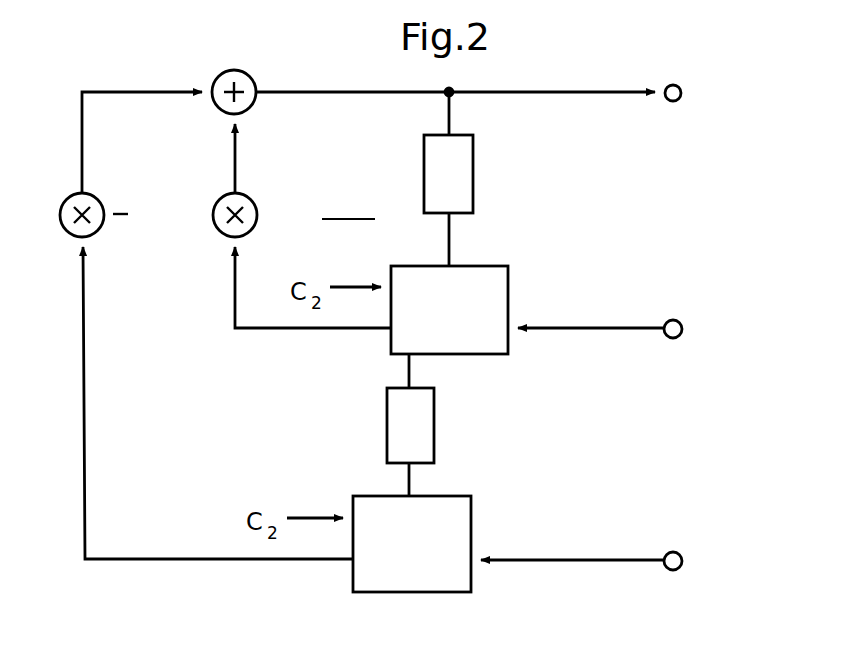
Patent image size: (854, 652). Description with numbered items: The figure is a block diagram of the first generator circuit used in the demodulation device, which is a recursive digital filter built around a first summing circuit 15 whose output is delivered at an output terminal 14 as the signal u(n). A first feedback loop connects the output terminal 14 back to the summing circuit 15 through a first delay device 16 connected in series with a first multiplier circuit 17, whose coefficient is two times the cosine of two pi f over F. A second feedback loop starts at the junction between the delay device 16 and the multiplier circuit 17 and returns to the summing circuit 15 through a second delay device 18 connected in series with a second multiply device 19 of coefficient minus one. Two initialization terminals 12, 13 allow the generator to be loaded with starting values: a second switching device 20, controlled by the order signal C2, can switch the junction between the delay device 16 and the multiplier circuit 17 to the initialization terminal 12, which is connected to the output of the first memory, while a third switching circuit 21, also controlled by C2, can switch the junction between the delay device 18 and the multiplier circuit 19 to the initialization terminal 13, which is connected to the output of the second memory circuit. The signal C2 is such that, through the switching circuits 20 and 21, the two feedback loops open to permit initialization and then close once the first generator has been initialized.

The initialization terminal 12 is at (682, 322).
The initialization terminal 13 is at (683, 556).
The output terminal 14 is at (681, 86).
The first summing circuit 15 is at (255, 76).
The first delay device 16 is at (474, 181).
The first multiplier circuit 17 is at (222, 238).
The second delay device 18 is at (436, 438).
The second multiply device 19 is at (70, 238).
The second switching device 20 is at (510, 292).
The third switching circuit 21 is at (473, 523).